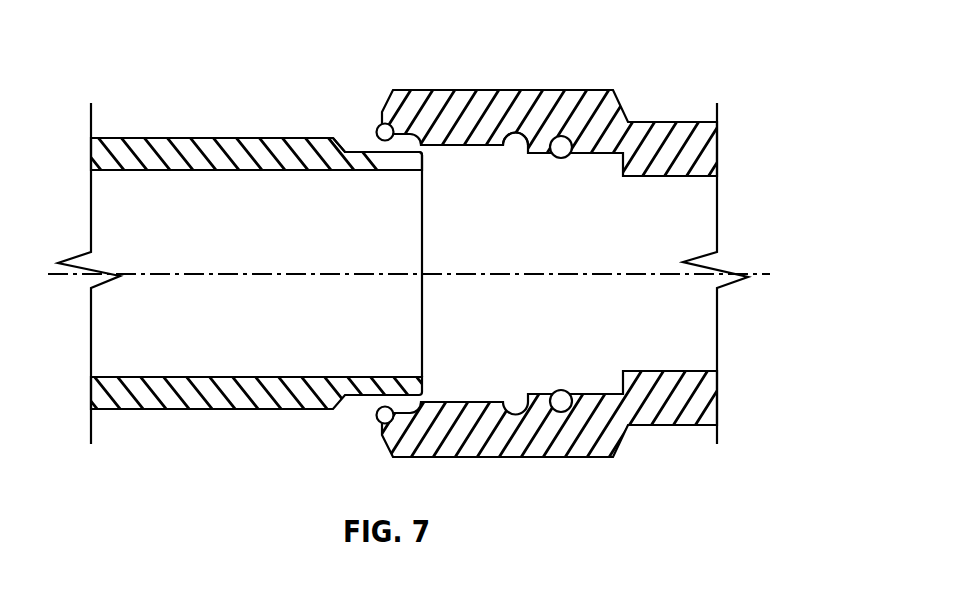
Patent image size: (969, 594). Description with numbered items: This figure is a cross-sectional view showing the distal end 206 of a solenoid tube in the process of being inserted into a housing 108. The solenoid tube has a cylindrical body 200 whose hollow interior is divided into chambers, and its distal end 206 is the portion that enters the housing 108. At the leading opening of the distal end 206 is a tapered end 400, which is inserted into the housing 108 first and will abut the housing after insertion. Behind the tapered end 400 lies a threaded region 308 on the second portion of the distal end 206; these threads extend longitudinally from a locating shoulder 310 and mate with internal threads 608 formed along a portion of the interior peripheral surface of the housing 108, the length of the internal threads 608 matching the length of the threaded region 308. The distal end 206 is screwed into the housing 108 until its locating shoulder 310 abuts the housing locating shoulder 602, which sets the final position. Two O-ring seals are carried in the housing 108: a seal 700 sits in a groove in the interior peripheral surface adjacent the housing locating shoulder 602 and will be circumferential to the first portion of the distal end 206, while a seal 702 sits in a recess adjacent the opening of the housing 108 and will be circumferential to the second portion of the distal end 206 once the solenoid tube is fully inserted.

The housing 108 is at (580, 85).
The cylindrical body 200 is at (185, 153).
The distal end 206 is at (177, 122).
The threaded region 308 is at (269, 135).
The locating shoulder 310 is at (336, 163).
The tapered end 400 is at (413, 162).
The housing locating shoulder 602 is at (518, 148).
The internal threads 608 is at (469, 153).
The seal 700 is at (545, 138).
The seal 702 is at (371, 125).